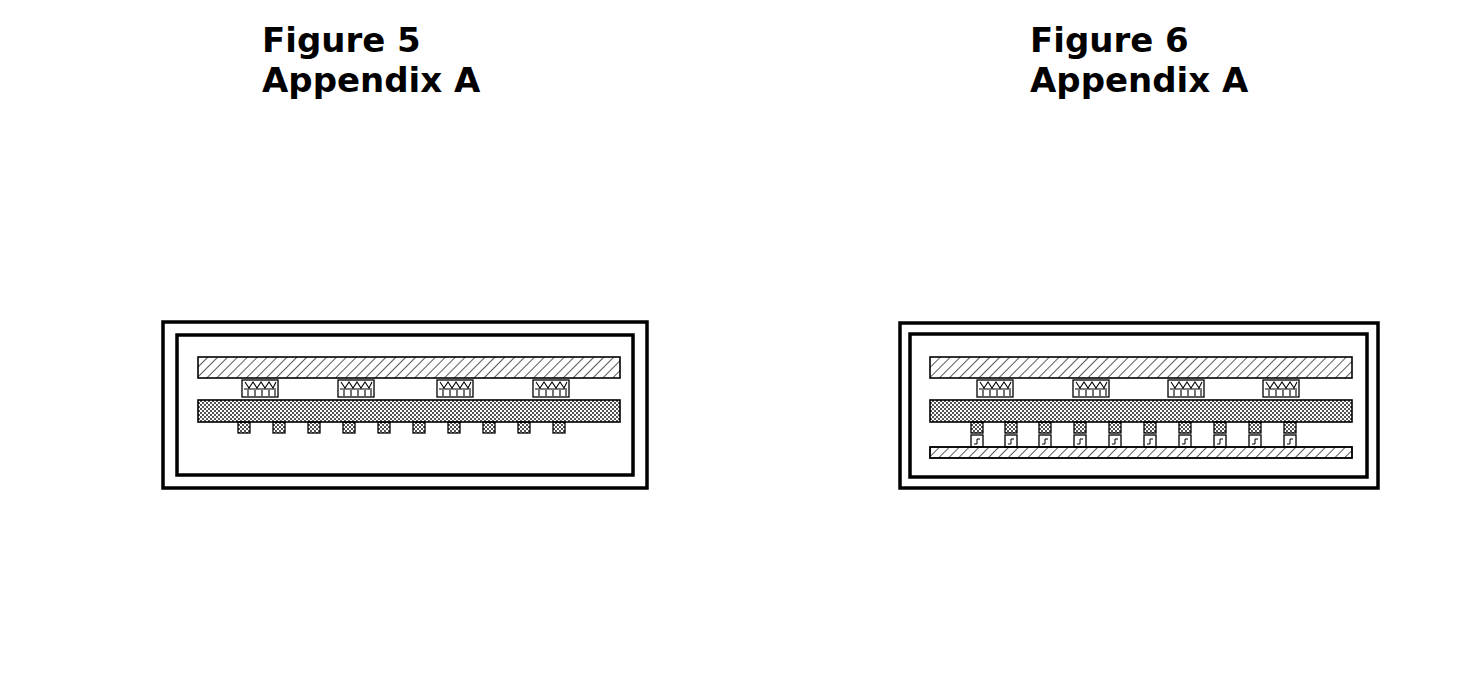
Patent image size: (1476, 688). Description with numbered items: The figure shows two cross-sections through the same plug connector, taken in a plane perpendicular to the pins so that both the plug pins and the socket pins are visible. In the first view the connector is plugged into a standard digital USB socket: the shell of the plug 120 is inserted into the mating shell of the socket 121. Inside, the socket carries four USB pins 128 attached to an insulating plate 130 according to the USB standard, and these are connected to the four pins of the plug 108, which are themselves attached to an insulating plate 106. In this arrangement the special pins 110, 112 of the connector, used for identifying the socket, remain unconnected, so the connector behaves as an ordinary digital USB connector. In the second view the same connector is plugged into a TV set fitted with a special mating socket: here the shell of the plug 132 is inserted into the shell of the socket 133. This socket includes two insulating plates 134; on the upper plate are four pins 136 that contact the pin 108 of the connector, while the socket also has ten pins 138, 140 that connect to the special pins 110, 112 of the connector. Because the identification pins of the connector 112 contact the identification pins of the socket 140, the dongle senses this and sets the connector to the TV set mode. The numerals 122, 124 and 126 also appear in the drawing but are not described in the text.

In FIG. 5, the insulating plate 106 is at (623, 417).
In FIG. 5, the pins of the plug 108 is at (243, 402).
In FIG. 6, the pins of the plug 108 is at (970, 428).
In FIG. 5, the special pins 110 is at (320, 432).
In FIG. 6, the special pins 110 is at (1170, 450).
In FIG. 5, the identification pins of the connector 112 is at (552, 430).
In FIG. 6, the identification pins of the connector 112 is at (1287, 432).
In FIG. 5, the shell of the plug 120 is at (592, 477).
In FIG. 5, the shell of the socket 121 is at (638, 488).
In FIG. 6, the circuit board 122 is at (930, 415).
In FIG. 6, the cover plate 124 is at (1292, 377).
In FIG. 6, the base plate 126 is at (1040, 447).
In FIG. 5, the USB pins 128 is at (250, 383).
In FIG. 5, the insulating plate 130 is at (598, 357).
In FIG. 6, the shell of the plug 132 is at (897, 323).
In FIG. 6, the shell of the socket 133 is at (1010, 323).
In FIG. 6, the insulating plates 134 is at (1352, 452).
In FIG. 6, the pins 136 is at (1073, 384).
In FIG. 6, the pins of the socket 138 is at (1127, 440).
In FIG. 6, the identification pins of the socket 140 is at (1300, 450).